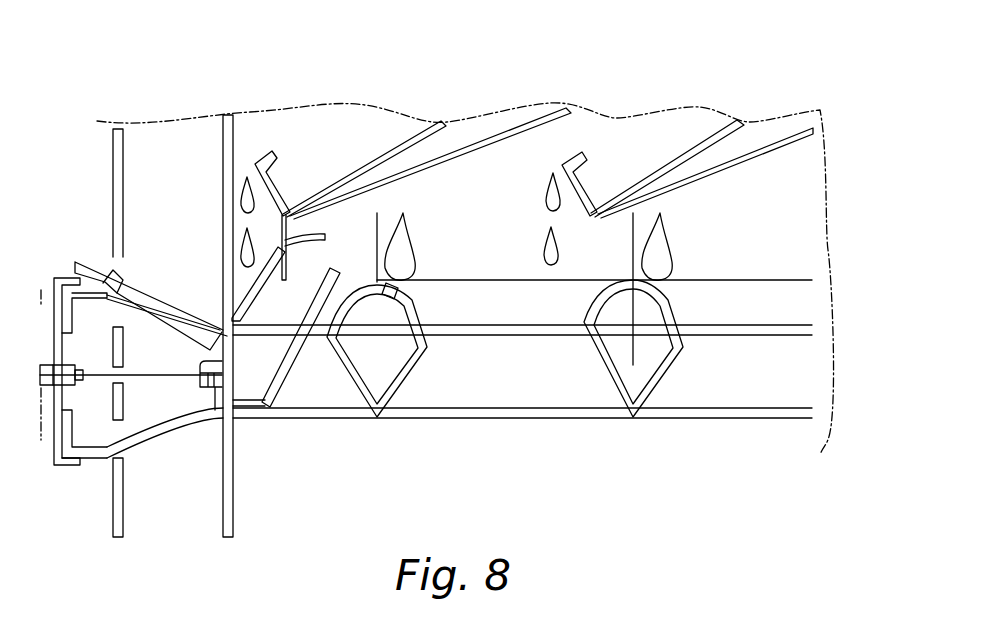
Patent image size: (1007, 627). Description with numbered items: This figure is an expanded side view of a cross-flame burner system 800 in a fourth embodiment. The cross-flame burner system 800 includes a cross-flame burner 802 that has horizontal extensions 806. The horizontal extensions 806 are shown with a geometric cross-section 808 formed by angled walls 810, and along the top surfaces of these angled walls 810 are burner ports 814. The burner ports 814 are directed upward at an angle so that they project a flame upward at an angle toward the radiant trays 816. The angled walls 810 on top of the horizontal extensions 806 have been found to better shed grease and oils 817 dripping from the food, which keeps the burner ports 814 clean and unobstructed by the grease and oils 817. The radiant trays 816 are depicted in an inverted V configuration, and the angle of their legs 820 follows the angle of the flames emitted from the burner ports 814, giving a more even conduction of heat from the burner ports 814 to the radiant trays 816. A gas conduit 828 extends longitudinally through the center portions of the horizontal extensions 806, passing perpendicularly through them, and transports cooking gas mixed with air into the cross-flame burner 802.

The cross-flame burner system 800 is at (172, 58).
The cross-flame burner 802 is at (707, 317).
The horizontal extensions 806 is at (660, 365).
The geometric cross-section 808 is at (607, 360).
The angled walls 810 is at (403, 287).
The burner ports 814 is at (388, 283).
The radiant trays 816 is at (368, 156).
The grease and oils 817 is at (246, 198).
The legs 820 is at (334, 180).
The gas conduit 828 is at (457, 340).